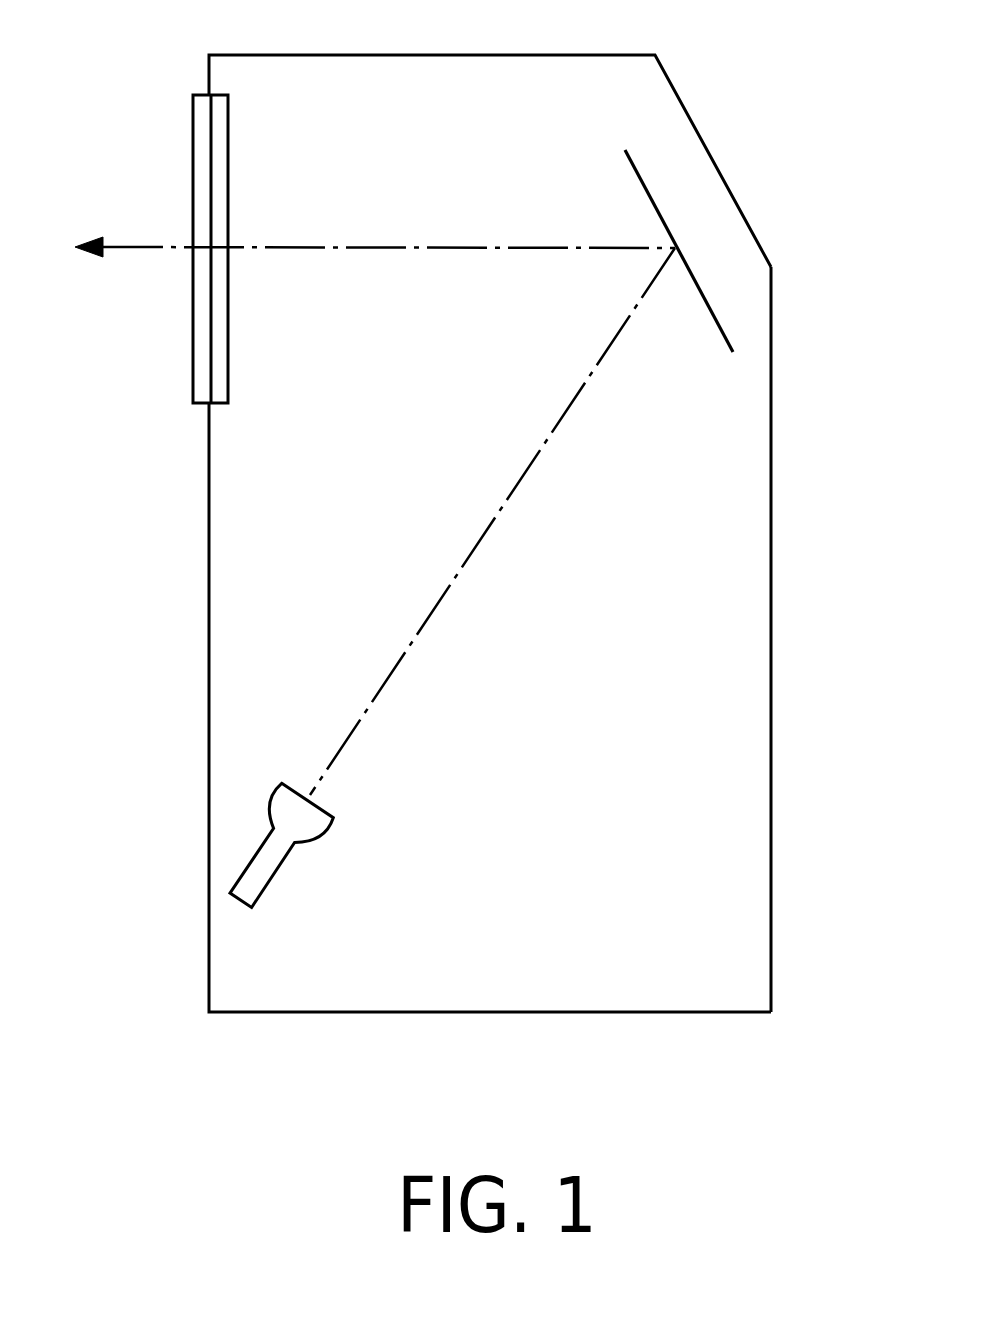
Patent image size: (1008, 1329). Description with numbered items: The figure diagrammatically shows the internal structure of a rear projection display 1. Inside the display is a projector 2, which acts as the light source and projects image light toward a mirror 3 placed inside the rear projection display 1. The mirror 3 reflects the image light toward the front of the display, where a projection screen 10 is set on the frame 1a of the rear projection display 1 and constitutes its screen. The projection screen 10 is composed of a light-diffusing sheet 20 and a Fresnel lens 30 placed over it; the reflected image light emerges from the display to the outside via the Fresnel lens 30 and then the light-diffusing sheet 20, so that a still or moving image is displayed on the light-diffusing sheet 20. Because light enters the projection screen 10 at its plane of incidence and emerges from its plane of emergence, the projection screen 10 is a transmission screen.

The projection screen 10 is at (150, 105).
The rear projection display 1 is at (770, 519).
The frame 1a is at (770, 929).
The projector 2 is at (280, 865).
The mirror 3 is at (657, 205).
The light-diffusing sheet 20 is at (193, 342).
The Fresnel lens 30 is at (228, 152).